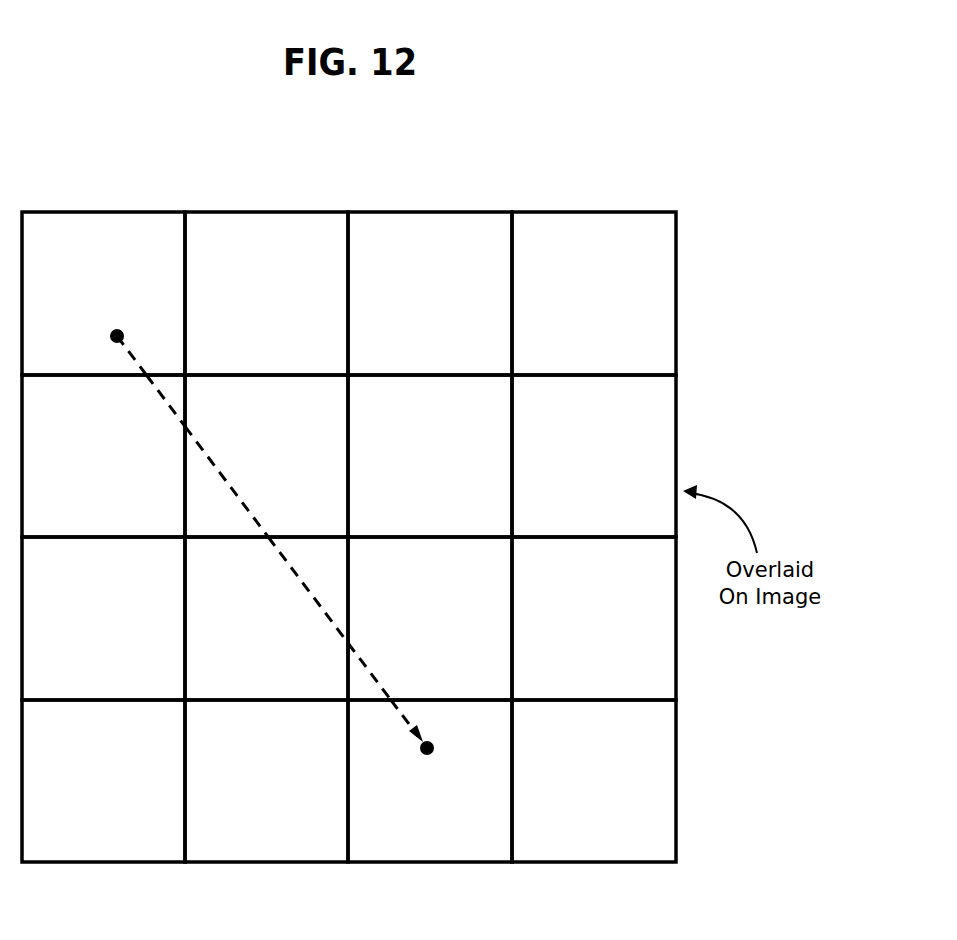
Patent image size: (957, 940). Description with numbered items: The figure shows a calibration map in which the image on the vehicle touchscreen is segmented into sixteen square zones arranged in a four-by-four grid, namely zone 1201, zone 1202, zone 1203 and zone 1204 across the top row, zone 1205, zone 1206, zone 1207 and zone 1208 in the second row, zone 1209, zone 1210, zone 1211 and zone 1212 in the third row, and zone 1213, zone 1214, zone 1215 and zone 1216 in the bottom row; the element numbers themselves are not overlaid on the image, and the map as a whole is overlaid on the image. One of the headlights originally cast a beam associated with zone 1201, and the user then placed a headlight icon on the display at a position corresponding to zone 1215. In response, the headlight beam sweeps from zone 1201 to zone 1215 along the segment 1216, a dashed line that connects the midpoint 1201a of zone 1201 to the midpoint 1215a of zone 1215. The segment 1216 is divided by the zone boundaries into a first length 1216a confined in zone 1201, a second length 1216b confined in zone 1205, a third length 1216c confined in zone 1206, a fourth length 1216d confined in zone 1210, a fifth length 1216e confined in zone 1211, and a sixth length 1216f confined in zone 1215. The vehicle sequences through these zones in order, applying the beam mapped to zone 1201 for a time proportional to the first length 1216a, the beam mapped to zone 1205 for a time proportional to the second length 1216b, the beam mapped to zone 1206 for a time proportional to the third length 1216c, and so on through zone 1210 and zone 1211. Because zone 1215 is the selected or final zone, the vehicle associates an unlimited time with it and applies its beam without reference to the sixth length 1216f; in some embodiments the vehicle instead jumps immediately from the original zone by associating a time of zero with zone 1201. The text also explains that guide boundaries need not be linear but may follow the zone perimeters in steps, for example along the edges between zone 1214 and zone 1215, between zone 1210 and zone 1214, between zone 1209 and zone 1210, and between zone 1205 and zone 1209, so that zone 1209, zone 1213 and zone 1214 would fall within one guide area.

The zone 1201 is at (103, 293).
The zone 1202 is at (266, 293).
The zone 1203 is at (430, 293).
The zone 1204 is at (594, 293).
The zone 1205 is at (103, 456).
The zone 1206 is at (266, 456).
The zone 1207 is at (430, 456).
The zone 1208 is at (594, 456).
The zone 1209 is at (103, 618).
The zone 1210 is at (266, 618).
The zone 1211 is at (430, 618).
The zone 1212 is at (594, 618).
The zone 1213 is at (103, 781).
The zone 1214 is at (266, 781).
The zone 1215 is at (430, 781).
The segment 1216 is at (594, 781).
The midpoint 1201a is at (112, 343).
The midpoint 1215a is at (428, 741).
The first length 1216a is at (138, 363).
The second length 1216b is at (158, 391).
The third length 1216c is at (195, 441).
The fourth length 1216d is at (284, 557).
The fifth length 1216e is at (372, 670).
The sixth length 1216f is at (398, 715).